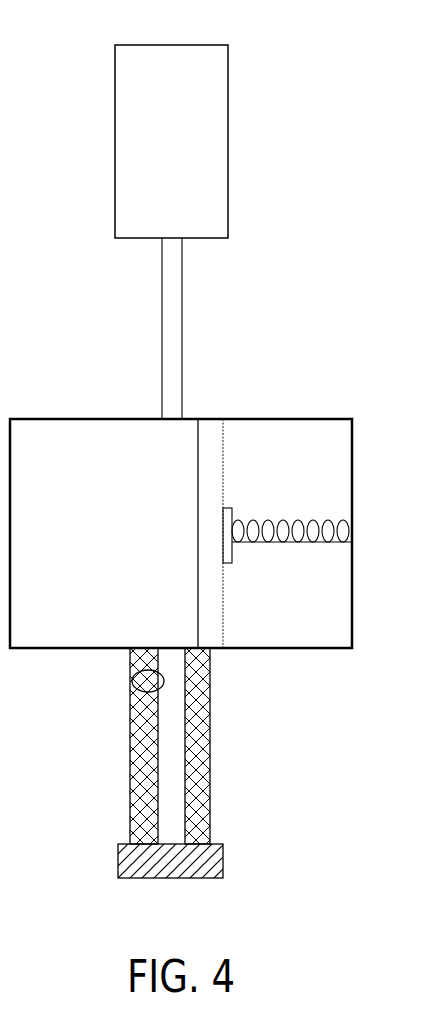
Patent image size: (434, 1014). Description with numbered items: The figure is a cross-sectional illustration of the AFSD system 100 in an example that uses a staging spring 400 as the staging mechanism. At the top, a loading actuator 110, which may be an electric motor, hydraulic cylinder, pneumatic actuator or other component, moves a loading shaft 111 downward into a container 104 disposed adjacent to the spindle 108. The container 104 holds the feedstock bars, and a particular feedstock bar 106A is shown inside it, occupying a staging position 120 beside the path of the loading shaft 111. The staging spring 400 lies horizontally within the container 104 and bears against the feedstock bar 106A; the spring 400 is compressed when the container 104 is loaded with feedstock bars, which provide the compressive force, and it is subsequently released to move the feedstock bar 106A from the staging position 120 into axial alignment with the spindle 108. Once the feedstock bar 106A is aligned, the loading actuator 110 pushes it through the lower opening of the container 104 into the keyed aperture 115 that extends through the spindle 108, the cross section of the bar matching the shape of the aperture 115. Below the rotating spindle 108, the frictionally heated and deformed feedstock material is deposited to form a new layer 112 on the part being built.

The AFSD system 100 is at (313, 49).
The loading actuator 110 is at (88, 282).
The loading shaft 111 is at (182, 360).
The container 104 is at (352, 473).
The feedstock bar 106A is at (197, 570).
The staging position 120 is at (189, 478).
The staging spring 400 is at (266, 561).
The spindle 108 is at (130, 803).
The aperture 115 is at (135, 673).
The new layer 112 is at (223, 860).